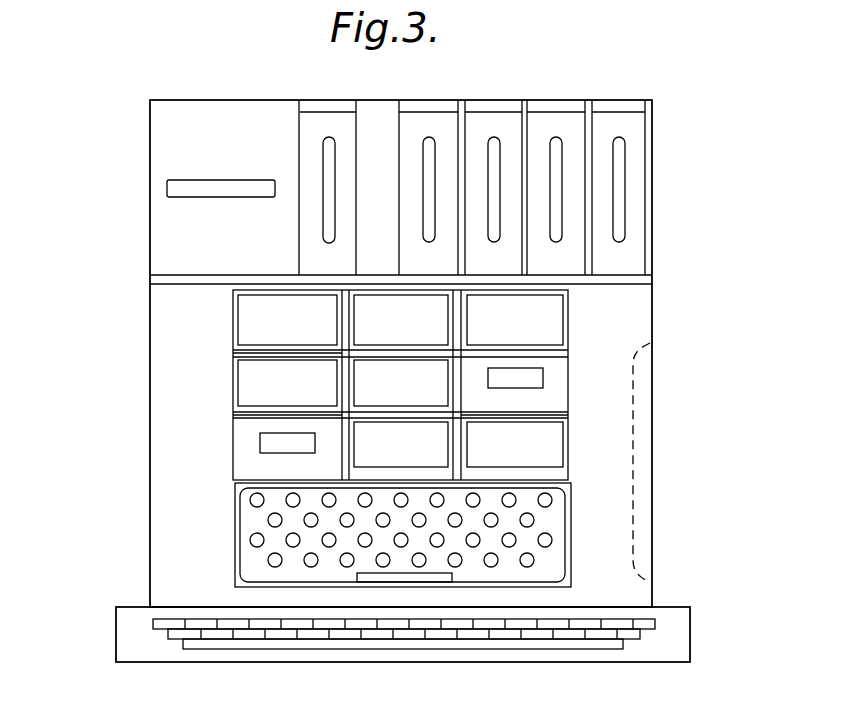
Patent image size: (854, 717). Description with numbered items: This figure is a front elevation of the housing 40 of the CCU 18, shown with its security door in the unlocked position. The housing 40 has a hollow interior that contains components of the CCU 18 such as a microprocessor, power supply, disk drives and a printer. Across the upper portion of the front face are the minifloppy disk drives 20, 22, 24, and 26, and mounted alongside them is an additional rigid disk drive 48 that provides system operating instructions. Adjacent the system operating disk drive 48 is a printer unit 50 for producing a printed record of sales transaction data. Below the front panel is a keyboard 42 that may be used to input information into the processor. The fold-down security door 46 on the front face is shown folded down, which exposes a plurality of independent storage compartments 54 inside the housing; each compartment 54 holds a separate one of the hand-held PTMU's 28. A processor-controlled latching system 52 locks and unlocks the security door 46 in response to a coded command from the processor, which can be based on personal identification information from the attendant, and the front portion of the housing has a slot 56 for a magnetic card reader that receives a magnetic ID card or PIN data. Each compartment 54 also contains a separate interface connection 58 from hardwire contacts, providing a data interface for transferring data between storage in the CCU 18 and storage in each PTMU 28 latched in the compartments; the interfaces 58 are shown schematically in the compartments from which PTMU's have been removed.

The CCU 18 is at (672, 322).
The minifloppy disk drive 20 is at (416, 122).
The minifloppy disk drive 22 is at (480, 122).
The minifloppy disk drive 24 is at (545, 122).
The minifloppy disk drive 26 is at (608, 122).
The hand-held PTMU 28 is at (245, 368).
The housing 40 is at (165, 396).
The keyboard 42 is at (672, 621).
The security door 46 is at (250, 552).
The rigid disk drive 48 is at (318, 122).
The printer unit 50 is at (175, 126).
The latching system 52 is at (372, 578).
The storage compartment 54 is at (330, 295).
The slot 56 is at (635, 460).
The interface connection 58 is at (268, 441).